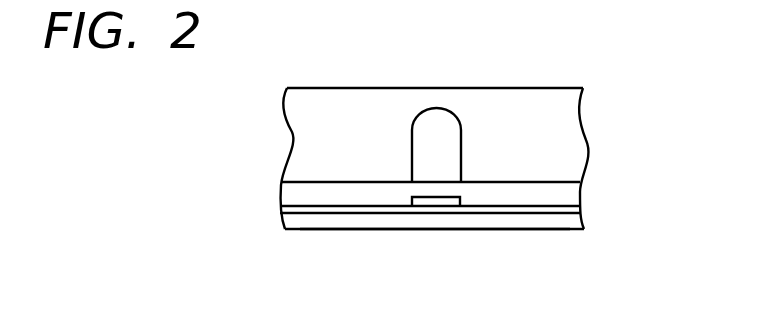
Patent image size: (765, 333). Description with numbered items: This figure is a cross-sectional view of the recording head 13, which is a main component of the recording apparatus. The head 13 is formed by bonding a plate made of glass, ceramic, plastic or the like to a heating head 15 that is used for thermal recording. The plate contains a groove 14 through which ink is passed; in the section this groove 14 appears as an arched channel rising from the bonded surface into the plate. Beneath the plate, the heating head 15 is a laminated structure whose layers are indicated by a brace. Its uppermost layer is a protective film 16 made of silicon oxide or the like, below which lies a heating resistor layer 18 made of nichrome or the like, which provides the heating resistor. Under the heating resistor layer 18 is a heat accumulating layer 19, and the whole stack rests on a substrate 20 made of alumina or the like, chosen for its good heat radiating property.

The head 13 is at (338, 88).
The groove 14 is at (437, 108).
The heating head 15 is at (593, 180).
The protective film 16 is at (364, 188).
The heating resistor layer 18 is at (439, 204).
The heat accumulating layer 19 is at (483, 212).
The substrate 20 is at (538, 220).